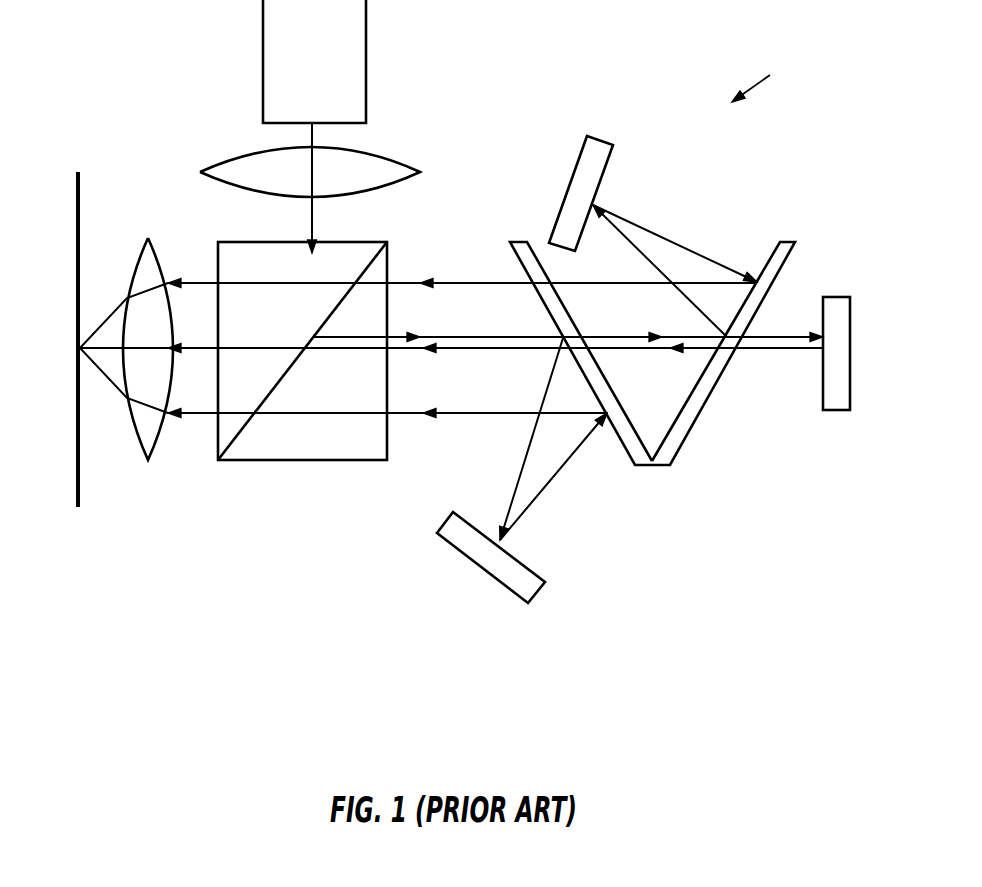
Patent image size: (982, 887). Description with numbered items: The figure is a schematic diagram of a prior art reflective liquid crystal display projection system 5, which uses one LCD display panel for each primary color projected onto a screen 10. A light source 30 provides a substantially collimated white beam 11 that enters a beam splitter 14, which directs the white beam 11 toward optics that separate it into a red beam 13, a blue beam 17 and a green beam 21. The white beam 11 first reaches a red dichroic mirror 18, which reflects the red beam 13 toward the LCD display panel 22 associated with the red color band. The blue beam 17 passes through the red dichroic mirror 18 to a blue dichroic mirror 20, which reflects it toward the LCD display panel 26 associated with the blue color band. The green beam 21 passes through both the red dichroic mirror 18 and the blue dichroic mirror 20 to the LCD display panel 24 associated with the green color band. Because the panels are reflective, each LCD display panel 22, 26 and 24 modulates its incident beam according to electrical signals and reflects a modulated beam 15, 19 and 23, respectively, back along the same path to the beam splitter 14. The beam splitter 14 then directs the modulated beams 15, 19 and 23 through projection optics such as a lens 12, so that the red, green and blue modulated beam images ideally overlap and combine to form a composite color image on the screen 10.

The reflective liquid crystal display projection system 5 is at (765, 77).
The screen 10 is at (47, 339).
The white beam 11 is at (539, 232).
The lens 12 is at (147, 368).
The red beam 13 is at (517, 439).
The beam splitter 14 is at (302, 370).
The modulated beam 15 is at (387, 475).
The blue beam 17 is at (649, 271).
The red dichroic mirror 18 is at (581, 370).
The modulated beam 19 is at (462, 246).
The blue dichroic mirror 20 is at (723, 370).
The green beam 21 is at (781, 320).
The LCD display panel 22 is at (481, 558).
The modulated beam 23 is at (451, 348).
The LCD display panel 24 is at (868, 353).
The LCD display panel 26 is at (560, 193).
The light source 30 is at (282, 61).